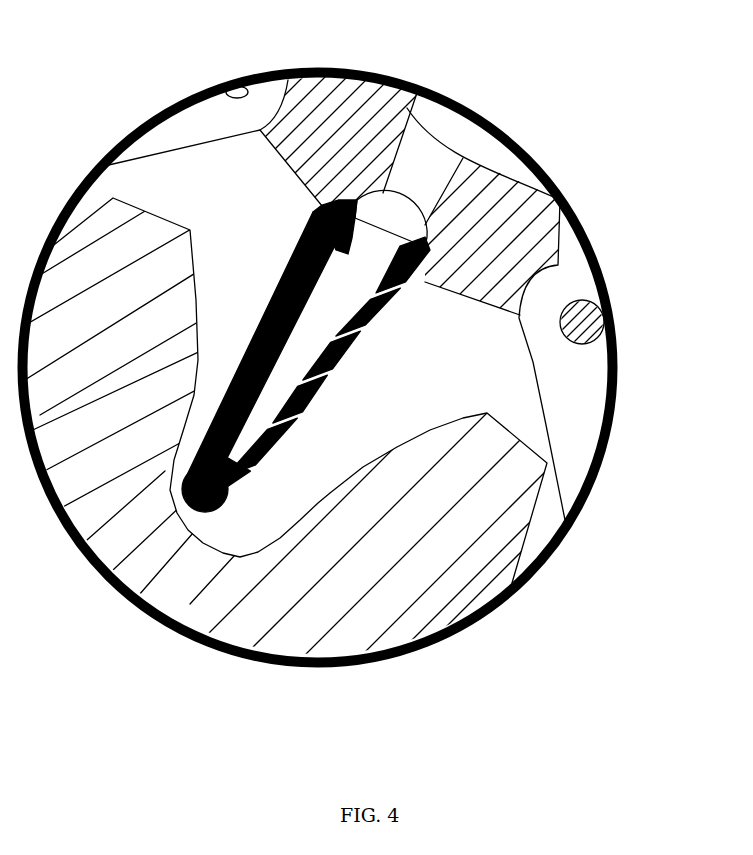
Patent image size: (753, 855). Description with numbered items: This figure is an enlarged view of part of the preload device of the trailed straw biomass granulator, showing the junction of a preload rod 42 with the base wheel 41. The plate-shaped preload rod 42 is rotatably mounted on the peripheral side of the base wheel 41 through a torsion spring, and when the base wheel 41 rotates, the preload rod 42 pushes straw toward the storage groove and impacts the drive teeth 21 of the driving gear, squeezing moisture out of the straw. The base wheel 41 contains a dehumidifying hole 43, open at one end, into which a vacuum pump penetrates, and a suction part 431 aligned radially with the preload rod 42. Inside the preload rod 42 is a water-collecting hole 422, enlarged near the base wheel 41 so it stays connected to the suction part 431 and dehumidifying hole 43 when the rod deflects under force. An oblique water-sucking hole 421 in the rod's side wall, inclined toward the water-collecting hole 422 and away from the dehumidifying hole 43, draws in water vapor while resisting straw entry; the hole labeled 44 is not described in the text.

The drive teeth 21 is at (495, 537).
The base wheel 41 is at (550, 223).
The preload rod 42 is at (311, 344).
The water-sucking hole 421 is at (333, 367).
The water-collecting hole 422 is at (330, 307).
The dehumidifying hole 43 is at (463, 130).
The suction part 431 is at (420, 170).
The through hole 44 is at (609, 314).